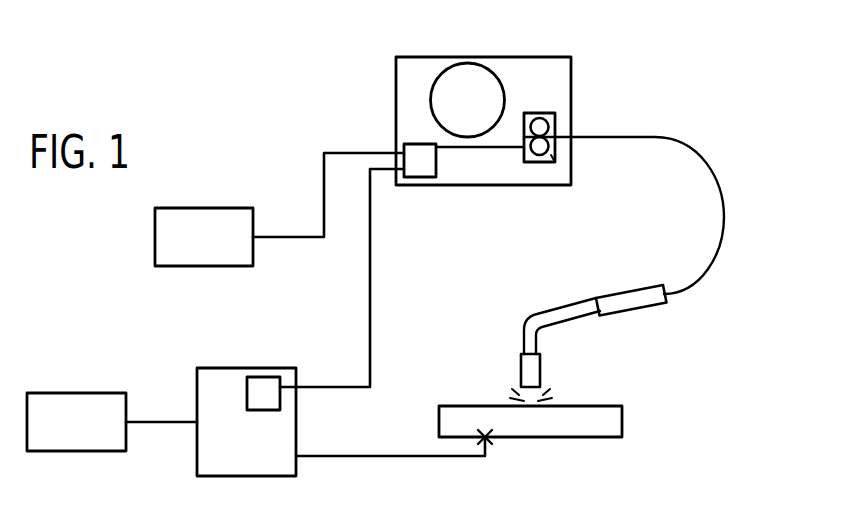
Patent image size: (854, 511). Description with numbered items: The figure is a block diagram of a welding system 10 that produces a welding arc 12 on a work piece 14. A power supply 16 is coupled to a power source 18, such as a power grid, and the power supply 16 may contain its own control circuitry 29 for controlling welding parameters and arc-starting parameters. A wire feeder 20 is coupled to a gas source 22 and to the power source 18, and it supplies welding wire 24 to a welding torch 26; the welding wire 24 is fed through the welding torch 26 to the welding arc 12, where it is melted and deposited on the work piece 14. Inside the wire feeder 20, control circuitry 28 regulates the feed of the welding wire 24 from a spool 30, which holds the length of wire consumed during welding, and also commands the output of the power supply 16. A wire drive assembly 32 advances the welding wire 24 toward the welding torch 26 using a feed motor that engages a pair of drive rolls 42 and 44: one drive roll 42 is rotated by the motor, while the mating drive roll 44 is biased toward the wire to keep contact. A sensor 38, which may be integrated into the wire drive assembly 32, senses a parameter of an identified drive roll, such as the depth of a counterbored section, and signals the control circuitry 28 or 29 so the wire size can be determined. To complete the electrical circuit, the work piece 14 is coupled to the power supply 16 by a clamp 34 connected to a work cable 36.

The welding system 10 is at (667, 67).
The welding arc 12 is at (519, 388).
The work piece 14 is at (622, 422).
The power supply 16 is at (247, 368).
The power source 18 is at (75, 392).
The wire feeder 20 is at (483, 57).
The gas source 22 is at (202, 208).
The welding wire 24 is at (572, 127).
The welding torch 26 is at (630, 288).
The control circuitry 28 is at (437, 163).
The control circuitry 29 is at (265, 377).
The spool 30 is at (433, 72).
The wire drive assembly 32 is at (552, 161).
The clamp 34 is at (490, 441).
The work cable 36 is at (392, 457).
The sensor 38 is at (531, 162).
The drive roll 42 is at (541, 162).
The drive roll 44 is at (541, 113).